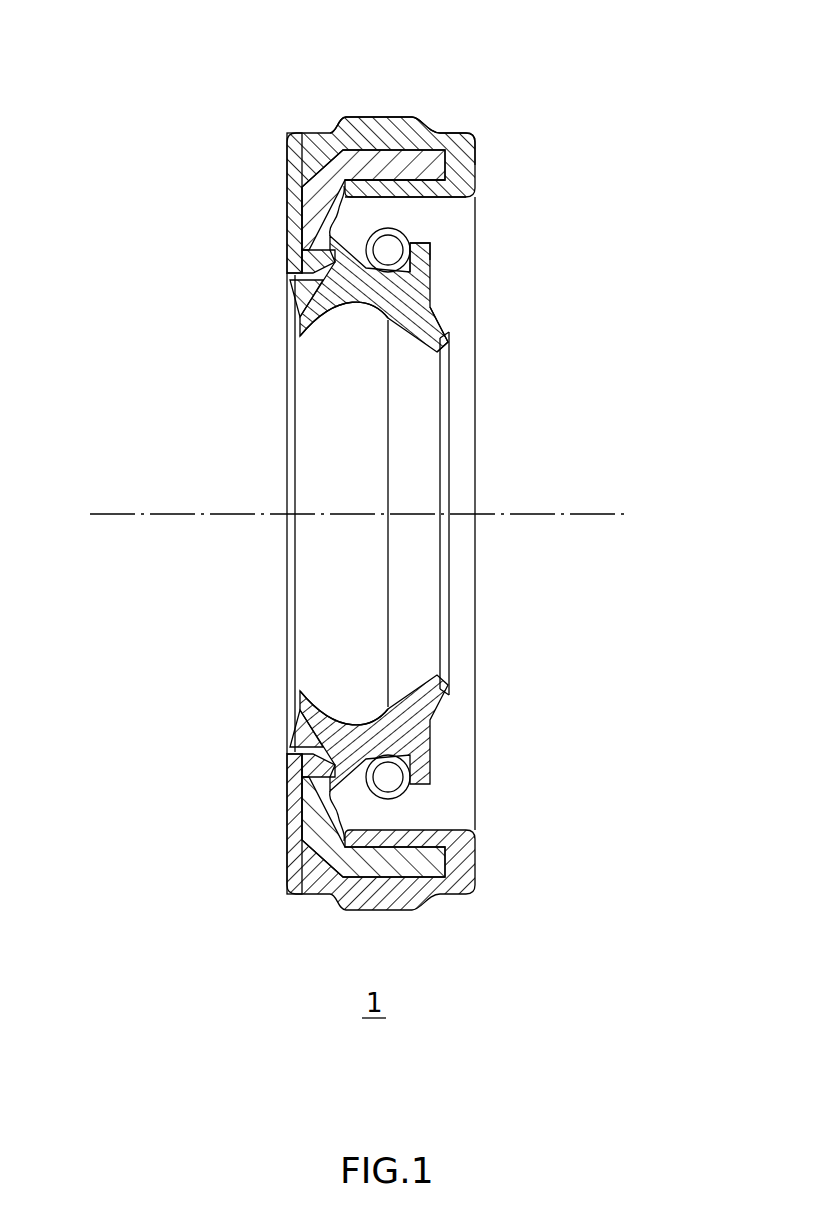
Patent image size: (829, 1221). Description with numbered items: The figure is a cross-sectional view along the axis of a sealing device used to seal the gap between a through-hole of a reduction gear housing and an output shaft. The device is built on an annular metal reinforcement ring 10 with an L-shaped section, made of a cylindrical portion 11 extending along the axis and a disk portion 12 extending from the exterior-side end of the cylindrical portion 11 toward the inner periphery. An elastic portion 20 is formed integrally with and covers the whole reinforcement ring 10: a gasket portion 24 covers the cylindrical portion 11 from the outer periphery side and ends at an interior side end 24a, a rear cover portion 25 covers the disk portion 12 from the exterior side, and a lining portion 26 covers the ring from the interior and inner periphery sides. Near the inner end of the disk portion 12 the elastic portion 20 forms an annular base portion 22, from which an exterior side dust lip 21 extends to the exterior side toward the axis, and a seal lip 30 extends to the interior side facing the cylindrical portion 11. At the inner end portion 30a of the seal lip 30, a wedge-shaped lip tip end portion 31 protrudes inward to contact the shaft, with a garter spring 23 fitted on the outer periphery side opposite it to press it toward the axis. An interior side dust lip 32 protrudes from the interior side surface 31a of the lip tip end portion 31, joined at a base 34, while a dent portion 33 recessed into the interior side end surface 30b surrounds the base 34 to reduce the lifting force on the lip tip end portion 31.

The reinforcement ring 10 is at (315, 865).
The cylindrical portion 11 is at (368, 864).
The disk portion 12 is at (318, 813).
The elastic portion 20 is at (266, 120).
The exterior side dust lip 21 is at (289, 308).
The base portion 22 is at (305, 275).
The garter spring 23 is at (407, 794).
The gasket portion 24 is at (411, 110).
The interior side end 24a is at (476, 155).
The rear cover portion 25 is at (290, 203).
The lining portion 26 is at (383, 186).
The seal lip 30 is at (336, 316).
The inner end portion 30a is at (414, 284).
The interior side end surface 30b is at (430, 250).
The lip tip end portion 31 is at (366, 326).
The interior side surface 31a is at (390, 328).
The interior side dust lip 32 is at (436, 326).
The dent portion 33 is at (430, 308).
The base 34 is at (450, 350).